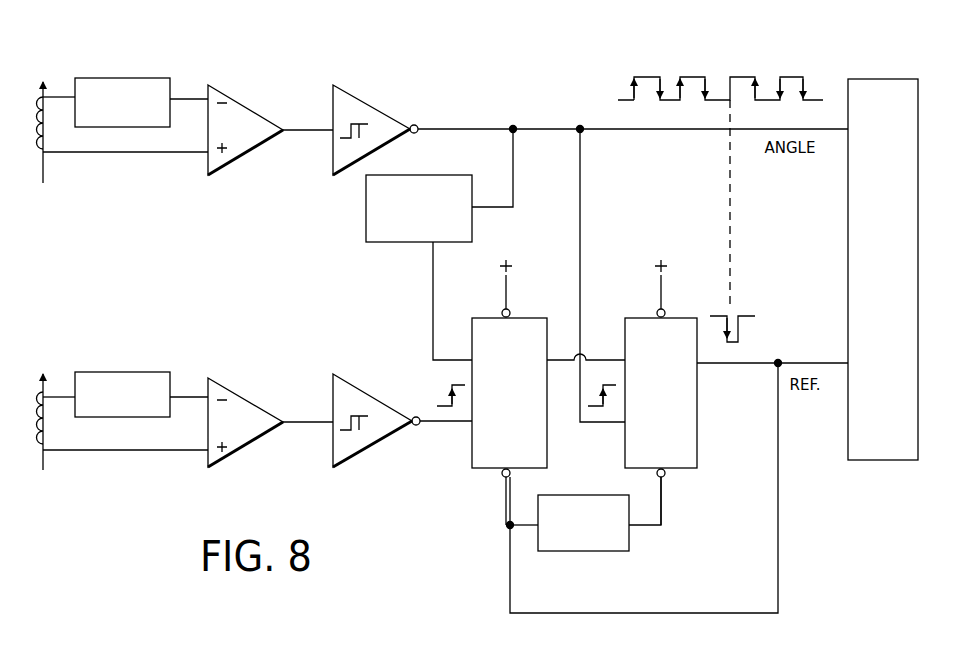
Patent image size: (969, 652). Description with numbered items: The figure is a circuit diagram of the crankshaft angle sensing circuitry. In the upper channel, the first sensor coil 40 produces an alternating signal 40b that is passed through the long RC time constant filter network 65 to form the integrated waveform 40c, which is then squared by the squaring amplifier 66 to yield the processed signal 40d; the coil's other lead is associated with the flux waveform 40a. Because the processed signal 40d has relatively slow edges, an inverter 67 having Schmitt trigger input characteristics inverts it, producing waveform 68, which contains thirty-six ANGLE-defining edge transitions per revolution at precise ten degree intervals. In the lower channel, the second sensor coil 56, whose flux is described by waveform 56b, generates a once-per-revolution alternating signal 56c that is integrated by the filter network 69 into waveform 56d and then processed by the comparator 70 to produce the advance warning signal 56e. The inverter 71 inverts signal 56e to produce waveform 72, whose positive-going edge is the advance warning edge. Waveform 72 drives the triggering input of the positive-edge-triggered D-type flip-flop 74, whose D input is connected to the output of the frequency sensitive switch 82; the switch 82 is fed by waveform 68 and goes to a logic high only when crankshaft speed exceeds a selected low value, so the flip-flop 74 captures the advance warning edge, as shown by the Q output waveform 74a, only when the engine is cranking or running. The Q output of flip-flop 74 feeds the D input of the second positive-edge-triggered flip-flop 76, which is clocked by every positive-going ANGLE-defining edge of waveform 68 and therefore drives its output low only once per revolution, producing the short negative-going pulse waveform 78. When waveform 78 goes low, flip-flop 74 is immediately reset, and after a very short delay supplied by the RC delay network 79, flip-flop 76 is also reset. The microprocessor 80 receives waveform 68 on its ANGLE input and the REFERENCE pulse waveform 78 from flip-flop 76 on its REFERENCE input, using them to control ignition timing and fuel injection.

The first sensor coil 40 is at (40, 98).
The waveform of net magnetic flux 40a is at (47, 168).
The alternating signal 40b is at (64, 95).
The integrated waveform 40c is at (191, 96).
The processed signal 40d is at (308, 133).
The filter network 65 is at (140, 78).
The squaring amplifier 66 is at (237, 96).
The inverter 67 is at (380, 113).
The waveform 68 is at (618, 100).
The frequency sensitive switch 82 is at (390, 244).
The second sensor coil 56 is at (40, 395).
The realistic flux waveform 56b is at (48, 460).
The alternating signal 56c is at (62, 395).
The integrated waveform 56d is at (192, 395).
The processed signal 56e is at (305, 426).
The filter network 69 is at (152, 372).
The comparator 70 is at (243, 397).
The inverter 71 is at (378, 393).
The waveform 72 is at (447, 427).
The D-type flip-flop 74 is at (487, 460).
The waveform 74a is at (607, 358).
The flip-flop 76 is at (688, 453).
The waveform 78 is at (755, 316).
The RC delay network 79 is at (602, 551).
The microprocessor 80 is at (880, 460).